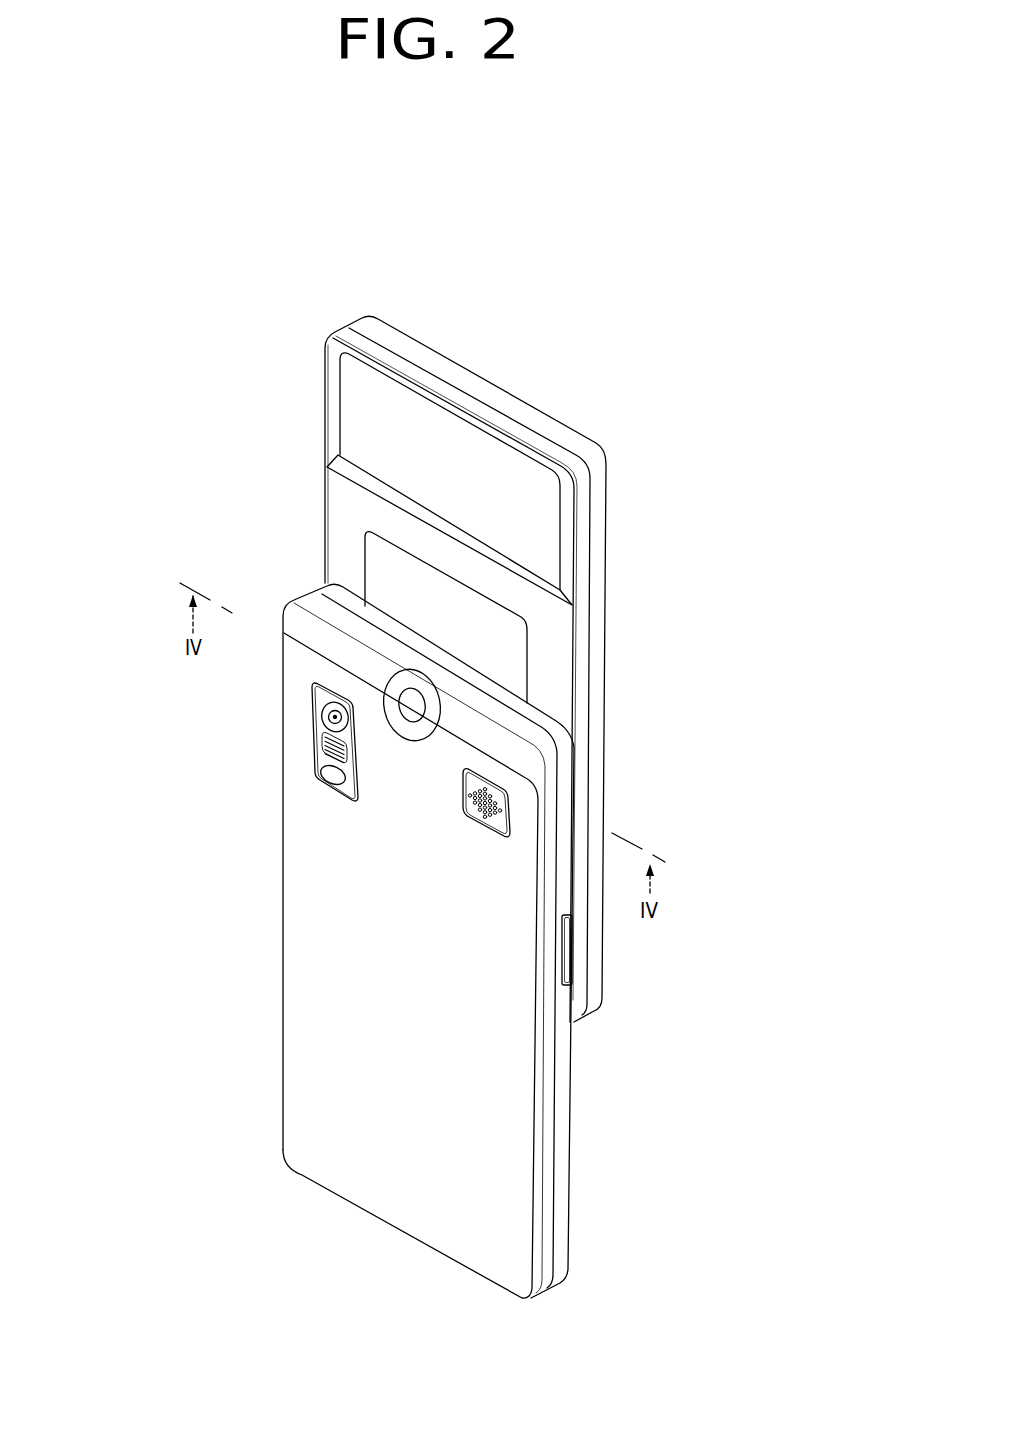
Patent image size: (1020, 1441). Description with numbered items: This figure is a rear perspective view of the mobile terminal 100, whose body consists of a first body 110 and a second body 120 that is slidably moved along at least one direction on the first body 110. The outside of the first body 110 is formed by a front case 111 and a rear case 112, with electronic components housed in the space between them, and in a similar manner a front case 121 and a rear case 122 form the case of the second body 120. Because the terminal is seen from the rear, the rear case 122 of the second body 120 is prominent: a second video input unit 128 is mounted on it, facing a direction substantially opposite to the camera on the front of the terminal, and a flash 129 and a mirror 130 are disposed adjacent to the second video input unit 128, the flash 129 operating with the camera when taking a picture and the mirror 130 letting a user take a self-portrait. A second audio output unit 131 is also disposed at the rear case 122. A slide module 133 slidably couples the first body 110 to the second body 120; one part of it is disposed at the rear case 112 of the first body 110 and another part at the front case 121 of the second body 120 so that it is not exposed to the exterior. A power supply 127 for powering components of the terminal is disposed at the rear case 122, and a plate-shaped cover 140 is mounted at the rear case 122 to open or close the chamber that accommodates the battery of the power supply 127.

The mobile terminal 100 is at (183, 293).
The first body 110 is at (323, 327).
The front case 111 is at (450, 370).
The rear case 112 is at (397, 360).
The second body 120 is at (573, 1185).
The front case 121 is at (560, 1042).
The rear case 122 is at (553, 1083).
The power supply 127 is at (290, 982).
The second video input unit 128 is at (333, 716).
The flash 129 is at (323, 743).
The mirror 130 is at (332, 775).
The second audio output unit 131 is at (498, 810).
The slide module 133 is at (378, 567).
The cover 140 is at (540, 410).